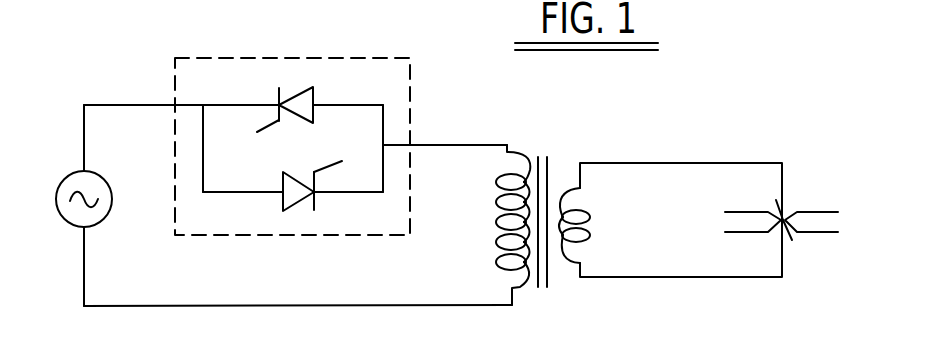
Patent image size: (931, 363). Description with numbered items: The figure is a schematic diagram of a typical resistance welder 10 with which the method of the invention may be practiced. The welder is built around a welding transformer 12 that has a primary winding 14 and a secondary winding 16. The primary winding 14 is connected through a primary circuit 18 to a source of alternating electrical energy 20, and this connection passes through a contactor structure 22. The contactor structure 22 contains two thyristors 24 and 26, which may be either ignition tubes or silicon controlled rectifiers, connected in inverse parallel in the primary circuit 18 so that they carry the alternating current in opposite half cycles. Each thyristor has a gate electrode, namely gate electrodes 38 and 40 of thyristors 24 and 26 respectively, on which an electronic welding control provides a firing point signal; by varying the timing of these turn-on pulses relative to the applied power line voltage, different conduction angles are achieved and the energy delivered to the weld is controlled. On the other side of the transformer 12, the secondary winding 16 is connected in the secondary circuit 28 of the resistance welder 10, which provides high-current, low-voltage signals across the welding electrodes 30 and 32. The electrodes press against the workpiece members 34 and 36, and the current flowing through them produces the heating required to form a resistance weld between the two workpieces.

The resistance welder 10 is at (503, 103).
The welding transformer 12 is at (540, 148).
The primary winding 14 is at (500, 221).
The secondary winding 16 is at (587, 217).
The primary circuit 18 is at (250, 308).
The source of alternating electrical energy 20 is at (75, 173).
The contactor structure 22 is at (281, 58).
The thyristor 24 is at (313, 88).
The thyristor 26 is at (314, 210).
The secondary circuit 28 is at (660, 163).
The welding electrode 30 is at (789, 207).
The welding electrode 32 is at (790, 235).
The workpiece member 34 is at (748, 233).
The workpiece member 36 is at (826, 212).
The gate electrode 38 is at (266, 129).
The gate electrode 40 is at (329, 167).